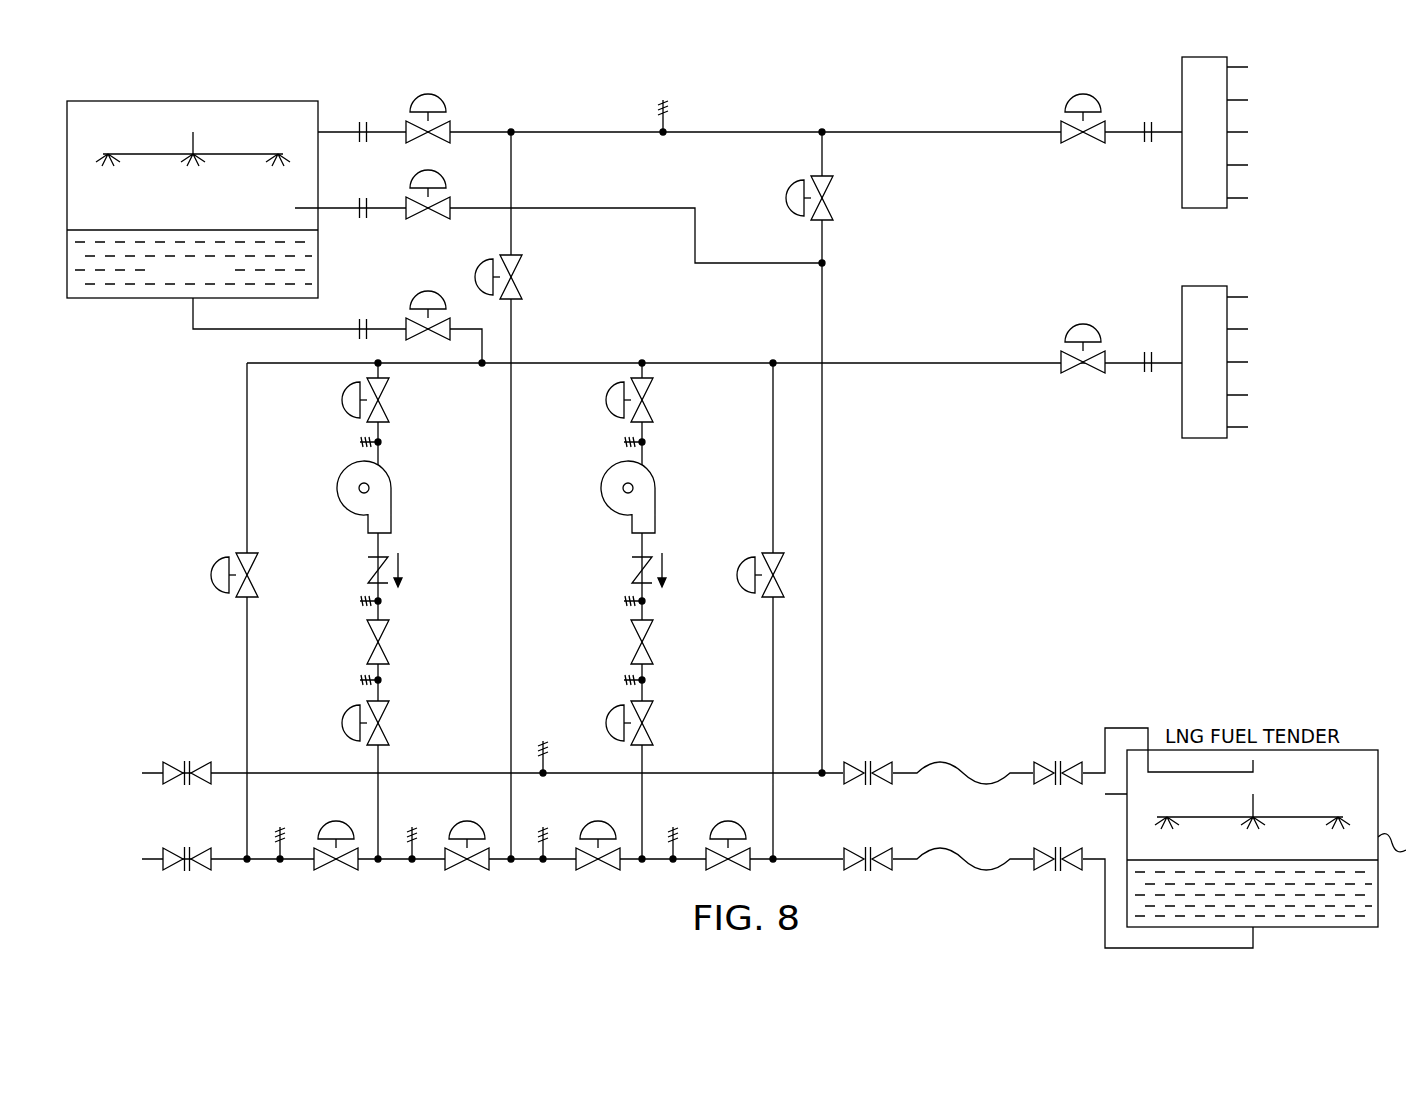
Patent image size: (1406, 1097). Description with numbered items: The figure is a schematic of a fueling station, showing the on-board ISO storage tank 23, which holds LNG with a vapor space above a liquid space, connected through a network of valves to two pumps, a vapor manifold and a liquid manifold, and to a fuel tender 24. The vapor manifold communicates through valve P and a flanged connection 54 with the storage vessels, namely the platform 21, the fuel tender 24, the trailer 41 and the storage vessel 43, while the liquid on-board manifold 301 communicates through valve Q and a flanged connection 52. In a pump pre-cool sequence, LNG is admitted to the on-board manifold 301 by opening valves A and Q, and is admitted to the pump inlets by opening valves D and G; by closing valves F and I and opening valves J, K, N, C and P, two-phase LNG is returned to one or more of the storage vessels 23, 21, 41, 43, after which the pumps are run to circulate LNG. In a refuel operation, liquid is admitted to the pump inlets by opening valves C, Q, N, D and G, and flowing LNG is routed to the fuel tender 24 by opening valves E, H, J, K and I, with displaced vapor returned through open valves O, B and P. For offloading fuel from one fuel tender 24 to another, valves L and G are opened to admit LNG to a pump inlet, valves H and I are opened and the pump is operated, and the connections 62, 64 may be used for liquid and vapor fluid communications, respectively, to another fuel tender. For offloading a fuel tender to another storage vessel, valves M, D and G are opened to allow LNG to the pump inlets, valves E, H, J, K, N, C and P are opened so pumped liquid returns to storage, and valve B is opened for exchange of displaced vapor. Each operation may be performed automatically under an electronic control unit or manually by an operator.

The storage tank 23 is at (128, 300).
The connection 54 is at (1145, 150).
The connection 52 is at (1145, 380).
The on-board manifold 301 is at (1180, 310).
The platform 21 is at (1211, 146).
The fuel tender 24 is at (1211, 146).
The trailer 41 is at (1211, 146).
The storage vessel 43 is at (1180, 82).
The connection 62 is at (188, 872).
The connection 64 is at (188, 760).
The valve A is at (410, 300).
The valve B is at (442, 172).
The valve C is at (442, 90).
The valve D is at (335, 393).
The valve E is at (335, 715).
The valve F is at (322, 820).
The valve G is at (598, 393).
The valve H is at (598, 715).
The valve I is at (714, 820).
The valve J is at (452, 820).
The valve K is at (584, 820).
The valve L is at (208, 560).
The valve M is at (738, 560).
The valve N is at (470, 263).
The valve O is at (780, 190).
The valve P is at (1062, 102).
The valve Q is at (1072, 322).